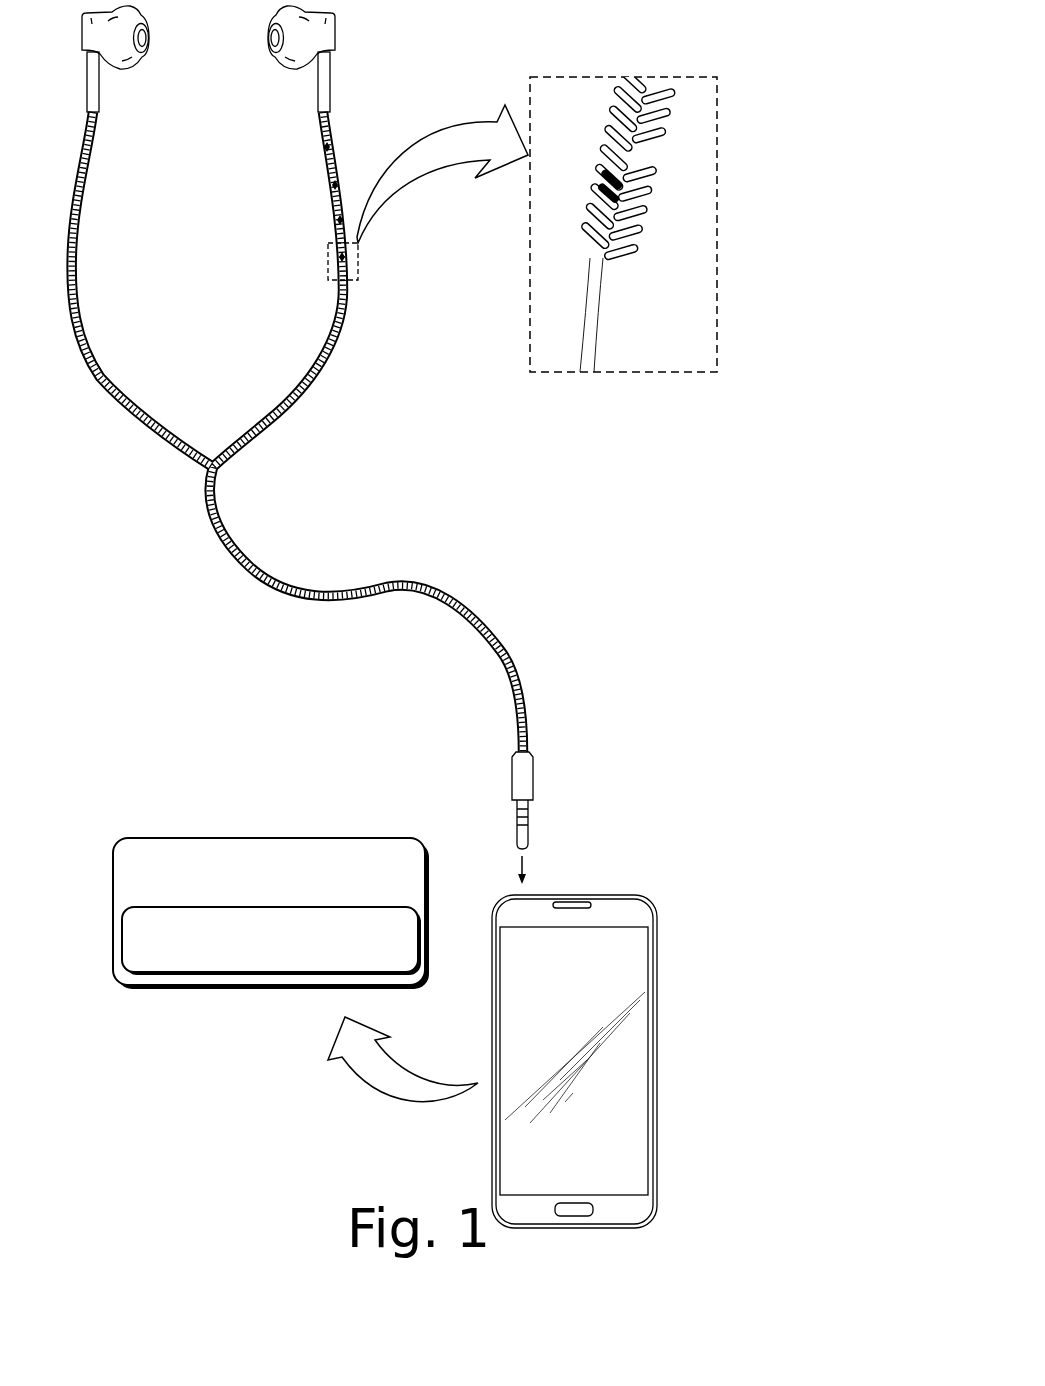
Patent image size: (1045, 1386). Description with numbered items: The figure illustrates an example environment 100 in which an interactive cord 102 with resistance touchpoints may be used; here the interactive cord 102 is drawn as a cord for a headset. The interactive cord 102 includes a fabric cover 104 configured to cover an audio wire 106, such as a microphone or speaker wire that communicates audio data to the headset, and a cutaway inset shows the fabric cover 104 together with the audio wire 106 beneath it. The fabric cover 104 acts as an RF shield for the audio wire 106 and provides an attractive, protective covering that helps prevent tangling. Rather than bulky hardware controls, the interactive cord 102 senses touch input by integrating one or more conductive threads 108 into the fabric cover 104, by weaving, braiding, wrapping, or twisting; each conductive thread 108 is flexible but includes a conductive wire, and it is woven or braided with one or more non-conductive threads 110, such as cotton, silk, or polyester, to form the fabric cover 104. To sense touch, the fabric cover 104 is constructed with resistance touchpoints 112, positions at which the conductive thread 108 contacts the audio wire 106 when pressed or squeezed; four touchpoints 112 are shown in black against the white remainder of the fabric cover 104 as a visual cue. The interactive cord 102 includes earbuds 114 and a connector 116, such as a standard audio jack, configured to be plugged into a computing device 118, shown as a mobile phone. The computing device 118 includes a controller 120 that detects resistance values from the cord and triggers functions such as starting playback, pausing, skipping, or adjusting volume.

The example environment 100 is at (634, 186).
The interactive cord 102 is at (344, 445).
The fabric cover 104 is at (653, 77).
The audio wire 106 is at (596, 340).
The conductive thread 108 is at (652, 172).
The non-conductive thread 110 is at (633, 235).
The resistance touchpoint 112 is at (603, 181).
The earbuds 114 is at (138, 71).
The connector 116 is at (528, 820).
The computing device 118 is at (271, 913).
The controller 120 is at (271, 941).